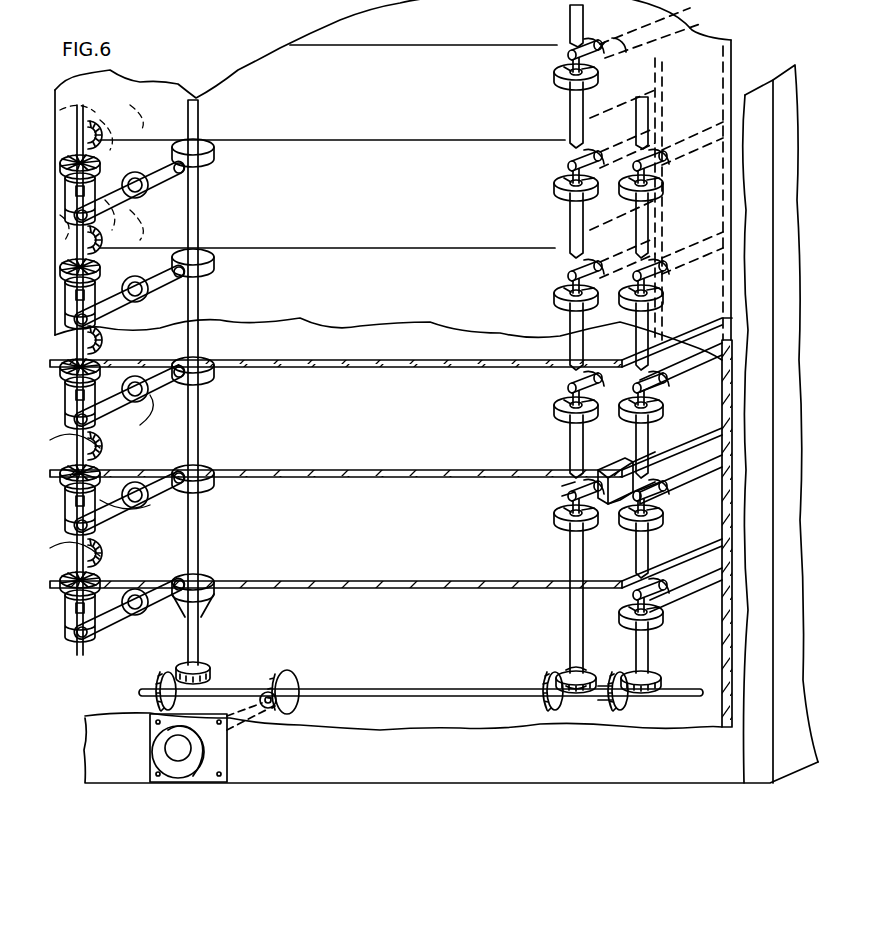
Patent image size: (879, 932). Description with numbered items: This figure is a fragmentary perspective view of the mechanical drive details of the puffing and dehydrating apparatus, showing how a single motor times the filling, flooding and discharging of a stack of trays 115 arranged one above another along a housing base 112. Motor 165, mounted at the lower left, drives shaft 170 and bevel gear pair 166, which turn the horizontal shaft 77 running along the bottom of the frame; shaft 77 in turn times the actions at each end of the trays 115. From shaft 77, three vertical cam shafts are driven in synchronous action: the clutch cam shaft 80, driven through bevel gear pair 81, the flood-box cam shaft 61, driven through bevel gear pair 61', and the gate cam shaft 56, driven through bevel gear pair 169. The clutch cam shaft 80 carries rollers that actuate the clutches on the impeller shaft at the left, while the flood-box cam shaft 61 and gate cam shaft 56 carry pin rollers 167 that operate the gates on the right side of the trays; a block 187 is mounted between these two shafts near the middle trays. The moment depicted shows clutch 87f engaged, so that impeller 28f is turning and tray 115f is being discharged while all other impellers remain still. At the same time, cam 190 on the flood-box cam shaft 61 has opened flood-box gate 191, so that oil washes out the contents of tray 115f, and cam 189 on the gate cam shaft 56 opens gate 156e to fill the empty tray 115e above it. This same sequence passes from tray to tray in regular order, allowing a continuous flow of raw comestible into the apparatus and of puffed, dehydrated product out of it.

The impeller 28f is at (62, 574).
The gate cam shaft 56 is at (638, 221).
The flood-box cam shaft 61 is at (563, 358).
The bevel gear pair 61' is at (594, 668).
The shaft 77 is at (338, 688).
The clutch cam shaft 80 is at (199, 206).
The bevel gear pair 81 is at (202, 668).
The clutch 87f is at (60, 612).
The housing base 112 is at (516, 756).
The trays 115 is at (386, 140).
The tray 115e is at (366, 457).
The tray 115f is at (356, 572).
The gate 156e is at (700, 472).
The motor 165 is at (152, 745).
The bevel gear pair 166 is at (290, 670).
The pin roller 167 is at (657, 195).
The bevel gear pair 169 is at (665, 700).
The shaft 170 is at (268, 720).
The block 187 is at (610, 470).
The cam 189 is at (650, 478).
The cam 190 is at (560, 488).
The flood-box gate 191 is at (614, 504).